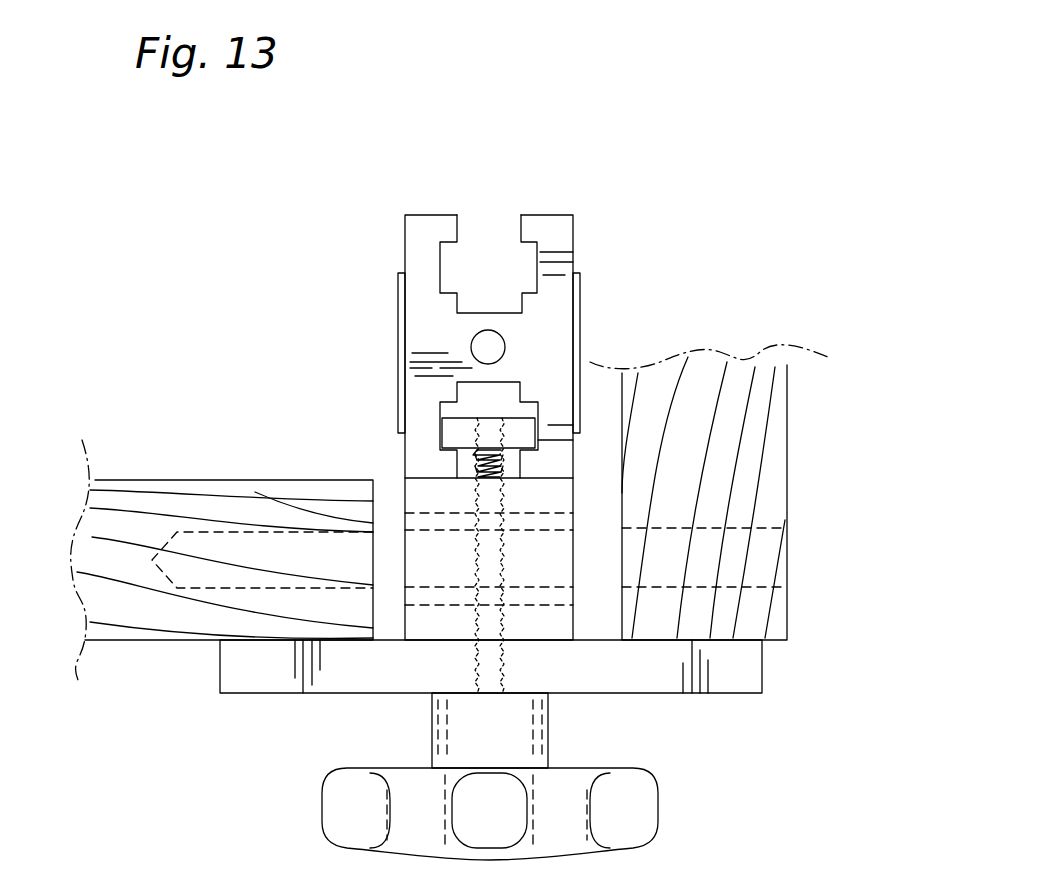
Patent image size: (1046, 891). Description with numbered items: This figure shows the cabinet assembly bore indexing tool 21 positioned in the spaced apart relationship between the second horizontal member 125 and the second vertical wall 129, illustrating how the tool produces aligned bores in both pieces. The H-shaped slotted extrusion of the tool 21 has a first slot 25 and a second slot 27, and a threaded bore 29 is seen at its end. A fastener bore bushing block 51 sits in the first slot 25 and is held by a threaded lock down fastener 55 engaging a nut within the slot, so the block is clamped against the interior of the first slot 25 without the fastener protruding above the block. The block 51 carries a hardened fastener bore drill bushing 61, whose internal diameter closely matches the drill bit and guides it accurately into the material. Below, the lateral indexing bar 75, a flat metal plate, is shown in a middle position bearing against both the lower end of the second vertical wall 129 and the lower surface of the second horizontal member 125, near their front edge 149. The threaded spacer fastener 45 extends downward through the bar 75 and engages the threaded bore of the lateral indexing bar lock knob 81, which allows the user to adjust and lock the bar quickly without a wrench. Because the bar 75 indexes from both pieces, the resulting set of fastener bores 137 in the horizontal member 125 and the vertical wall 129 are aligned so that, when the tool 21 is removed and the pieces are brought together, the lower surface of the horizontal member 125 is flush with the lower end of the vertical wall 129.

The cabinet assembly bore indexing tool 21 is at (400, 215).
The second slot 27 is at (487, 283).
The threaded bore 29 is at (490, 348).
The first slot 25 is at (514, 394).
The threaded lock down fastener 55 is at (457, 433).
The fastener bore bushing block 51 is at (513, 477).
The fastener bore drill bushing 61 is at (445, 533).
The second horizontal member 125 is at (147, 640).
The second vertical wall 129 is at (738, 360).
The front edge 149 is at (152, 502).
The fastener bore 137 is at (270, 532).
The lateral indexing bar 75 is at (730, 693).
The lateral indexing bar lock knob 81 is at (653, 823).
The threaded spacer fastener 45 is at (473, 662).